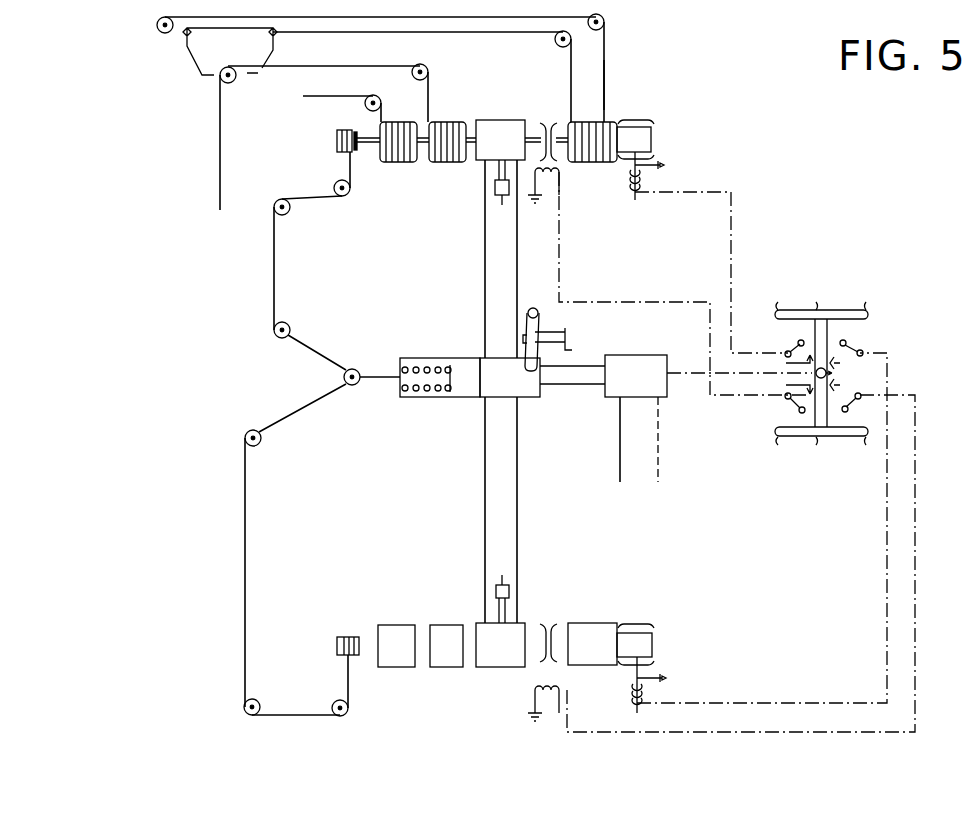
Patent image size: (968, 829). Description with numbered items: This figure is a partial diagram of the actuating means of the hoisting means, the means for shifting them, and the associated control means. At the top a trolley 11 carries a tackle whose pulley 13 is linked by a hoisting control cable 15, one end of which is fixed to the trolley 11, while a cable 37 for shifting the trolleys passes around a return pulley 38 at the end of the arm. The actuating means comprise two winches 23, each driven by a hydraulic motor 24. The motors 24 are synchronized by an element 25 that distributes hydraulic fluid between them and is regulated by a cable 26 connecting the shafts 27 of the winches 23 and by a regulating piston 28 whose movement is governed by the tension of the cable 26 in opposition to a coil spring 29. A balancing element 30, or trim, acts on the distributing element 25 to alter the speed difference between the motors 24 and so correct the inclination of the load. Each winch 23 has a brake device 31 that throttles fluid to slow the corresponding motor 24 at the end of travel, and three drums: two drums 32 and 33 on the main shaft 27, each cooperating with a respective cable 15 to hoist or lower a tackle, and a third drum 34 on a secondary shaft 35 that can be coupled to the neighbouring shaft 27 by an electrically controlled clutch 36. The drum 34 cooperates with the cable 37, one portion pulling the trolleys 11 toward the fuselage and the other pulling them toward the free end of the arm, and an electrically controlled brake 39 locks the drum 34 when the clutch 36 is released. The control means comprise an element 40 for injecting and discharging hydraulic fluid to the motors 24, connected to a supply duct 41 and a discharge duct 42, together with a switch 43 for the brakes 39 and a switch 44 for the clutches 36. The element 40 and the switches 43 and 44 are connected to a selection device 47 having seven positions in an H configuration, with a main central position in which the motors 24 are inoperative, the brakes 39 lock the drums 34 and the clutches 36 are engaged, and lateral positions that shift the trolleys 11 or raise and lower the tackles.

The trolley 11 is at (200, 48).
The pulley 13 is at (232, 84).
The hoisting control cable 15 is at (306, 64).
The winch 23 is at (481, 109).
The hydraulic motor 24 is at (502, 122).
The distributing element 25 is at (492, 382).
The cable 26 is at (270, 420).
The shaft 27 is at (359, 152).
The regulating piston 28 is at (378, 382).
The coil spring 29 is at (415, 392).
The balancing element 30 is at (540, 322).
The brake device 31 is at (503, 198).
The drum 32 is at (398, 154).
The drum 33 is at (445, 154).
The drum 34 is at (587, 160).
The secondary shaft 35 is at (562, 138).
The electrically controlled clutch 36 is at (542, 128).
The cable 37 is at (606, 80).
The return pulley 38 is at (156, 26).
The electrically controlled brake 39 is at (650, 150).
The element for injecting and discharging hydraulic fluid 40 is at (634, 358).
The supply duct 41 is at (618, 433).
The discharge duct 42 is at (659, 433).
The switch 43 is at (822, 346).
The switch 44 is at (820, 403).
The selection device 47 is at (830, 310).